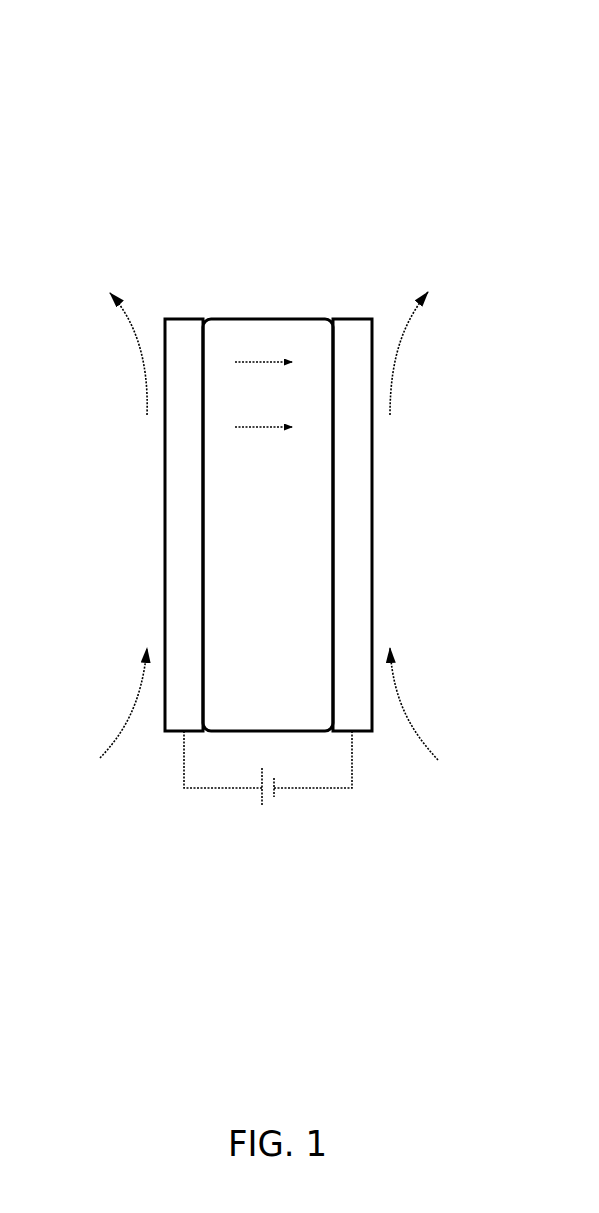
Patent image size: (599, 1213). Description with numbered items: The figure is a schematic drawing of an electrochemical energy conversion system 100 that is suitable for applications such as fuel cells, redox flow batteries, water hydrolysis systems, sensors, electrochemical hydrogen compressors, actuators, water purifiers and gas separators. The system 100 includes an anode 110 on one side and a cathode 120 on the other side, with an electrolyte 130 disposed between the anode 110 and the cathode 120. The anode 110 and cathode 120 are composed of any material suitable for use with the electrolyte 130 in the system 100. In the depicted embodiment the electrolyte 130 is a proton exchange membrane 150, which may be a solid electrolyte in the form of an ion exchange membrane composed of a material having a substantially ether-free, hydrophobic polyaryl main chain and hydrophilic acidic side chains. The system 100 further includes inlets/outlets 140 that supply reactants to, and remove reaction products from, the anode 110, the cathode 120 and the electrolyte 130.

The electrochemical energy conversion system 100 is at (180, 126).
The anode 110 is at (182, 318).
The cathode 120 is at (352, 318).
The electrolyte 130 is at (293, 541).
The inlets/outlets 140 is at (145, 374).
The proton exchange membrane 150 is at (268, 318).